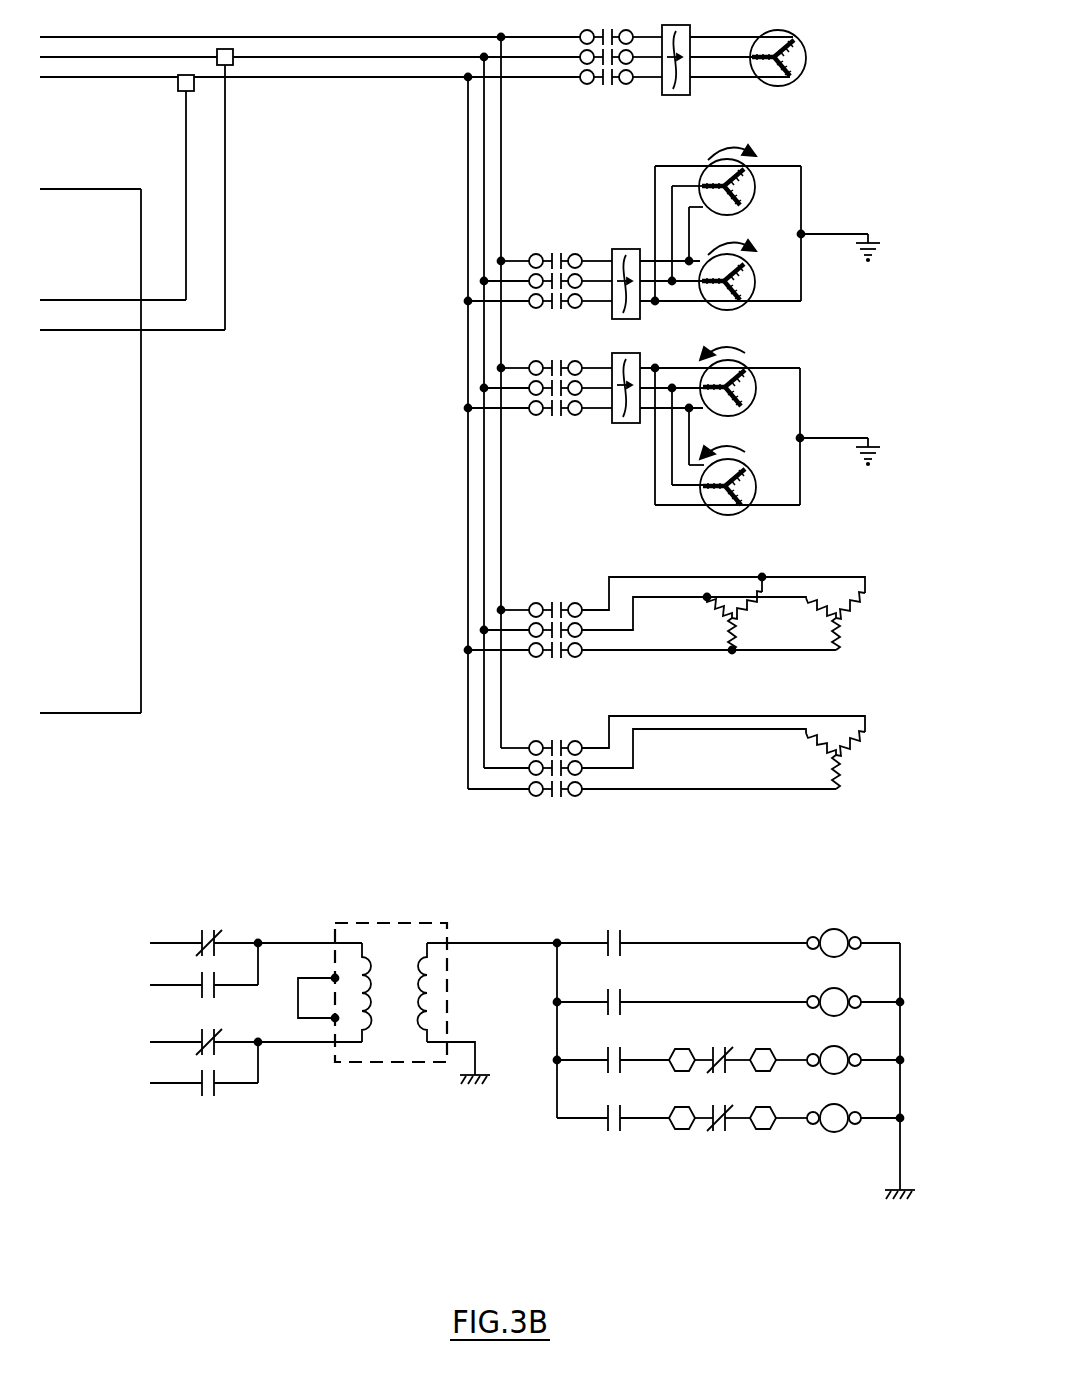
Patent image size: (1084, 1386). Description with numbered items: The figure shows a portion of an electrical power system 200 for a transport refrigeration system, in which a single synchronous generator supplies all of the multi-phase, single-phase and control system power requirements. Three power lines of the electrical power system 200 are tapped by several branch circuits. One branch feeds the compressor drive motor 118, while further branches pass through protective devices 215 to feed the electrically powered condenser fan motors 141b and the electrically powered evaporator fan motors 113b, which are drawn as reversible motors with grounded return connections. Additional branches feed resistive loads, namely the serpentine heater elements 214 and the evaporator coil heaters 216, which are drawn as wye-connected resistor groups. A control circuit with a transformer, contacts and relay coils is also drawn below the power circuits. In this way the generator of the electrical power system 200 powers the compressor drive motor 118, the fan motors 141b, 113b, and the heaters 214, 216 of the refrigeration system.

The electrical power system 200 is at (338, 30).
The compressor drive motor 118 is at (797, 40).
The overload protection relay 215 is at (627, 249).
The electrically powered condenser fan motors 141b is at (754, 184).
The electrically powered evaporator fan motors 113b is at (770, 396).
The serpentine heater elements 214 is at (847, 620).
The evaporator coil heaters 216 is at (847, 757).